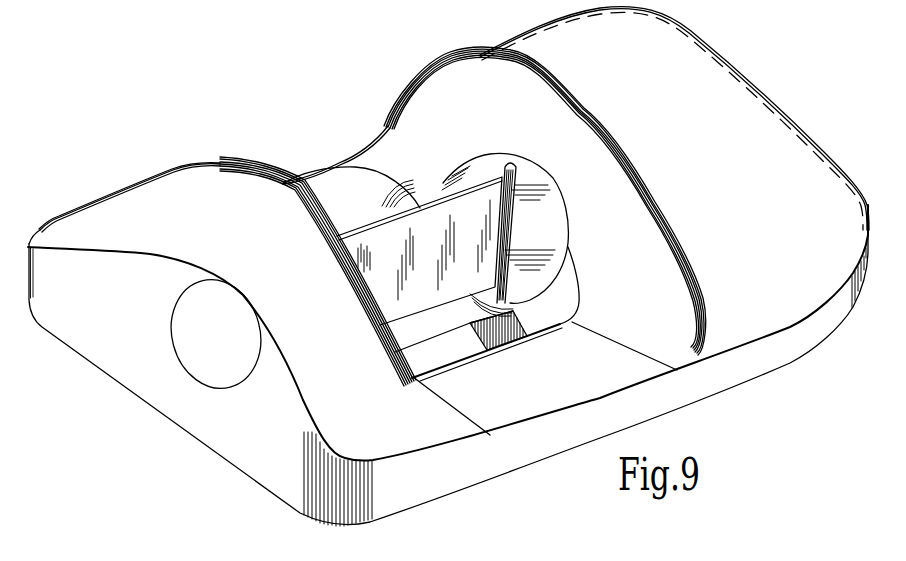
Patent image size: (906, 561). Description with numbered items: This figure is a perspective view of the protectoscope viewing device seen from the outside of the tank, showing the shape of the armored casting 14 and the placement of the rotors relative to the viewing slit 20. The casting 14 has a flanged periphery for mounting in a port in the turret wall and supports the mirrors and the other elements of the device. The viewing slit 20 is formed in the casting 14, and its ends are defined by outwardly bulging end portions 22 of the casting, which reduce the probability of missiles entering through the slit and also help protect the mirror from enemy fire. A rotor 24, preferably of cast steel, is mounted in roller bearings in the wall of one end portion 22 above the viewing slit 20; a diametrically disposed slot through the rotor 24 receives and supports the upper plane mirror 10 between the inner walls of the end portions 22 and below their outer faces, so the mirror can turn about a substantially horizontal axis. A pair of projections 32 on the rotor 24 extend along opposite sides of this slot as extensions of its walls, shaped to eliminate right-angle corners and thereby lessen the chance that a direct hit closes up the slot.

The plane mirror 10 is at (421, 204).
The armored casting 14 is at (434, 495).
The viewing slit 20 is at (460, 348).
The end portions 22 is at (483, 55).
The rotor 24 is at (550, 226).
The projections 32 is at (473, 180).